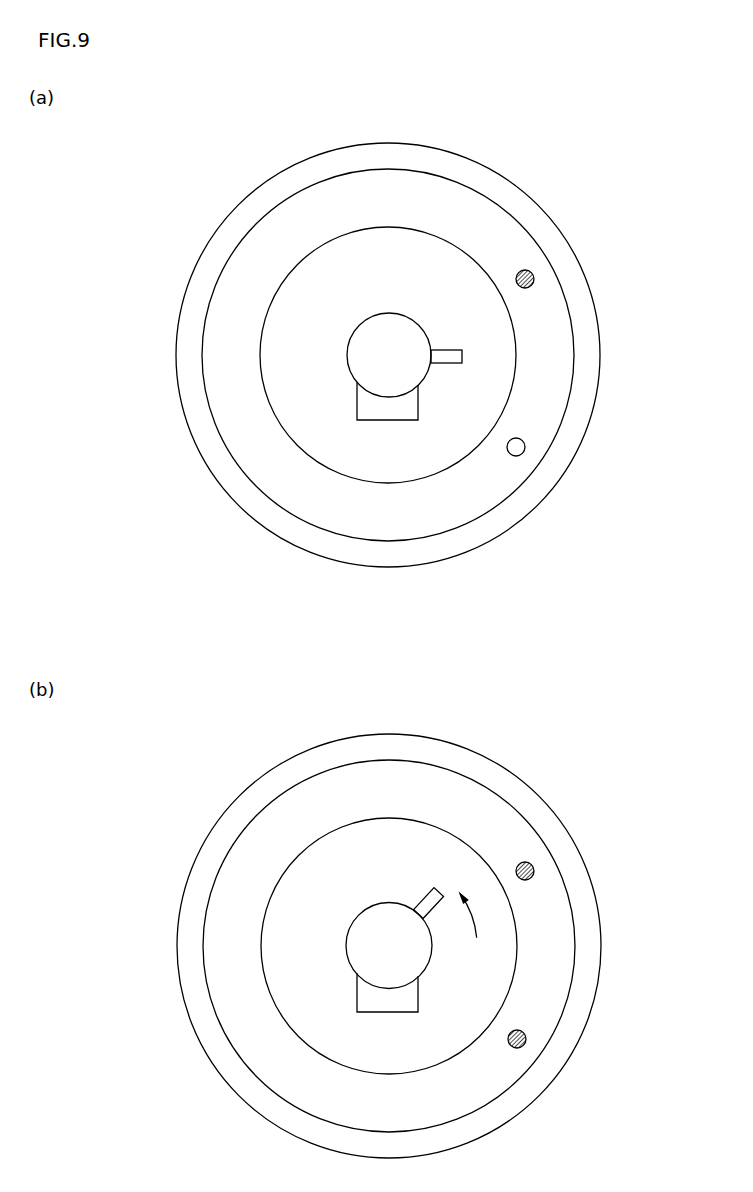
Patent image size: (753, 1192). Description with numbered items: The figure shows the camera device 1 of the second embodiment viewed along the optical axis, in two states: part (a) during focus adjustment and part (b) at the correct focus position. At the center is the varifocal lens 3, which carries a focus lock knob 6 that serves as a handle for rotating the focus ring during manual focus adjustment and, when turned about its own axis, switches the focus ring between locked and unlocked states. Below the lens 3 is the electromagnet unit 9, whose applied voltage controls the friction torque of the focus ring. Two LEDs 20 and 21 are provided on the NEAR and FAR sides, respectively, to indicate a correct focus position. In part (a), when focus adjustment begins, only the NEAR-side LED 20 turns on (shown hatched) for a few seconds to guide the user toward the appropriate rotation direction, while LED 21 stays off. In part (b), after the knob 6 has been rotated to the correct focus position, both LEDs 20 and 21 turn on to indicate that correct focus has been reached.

The camera device 1 is at (598, 140).
The lens 3 is at (370, 352).
The focus lock knob 6 is at (465, 357).
The electromagnet unit 9 is at (357, 403).
The LED 20 is at (534, 280).
The LED 21 is at (525, 447).